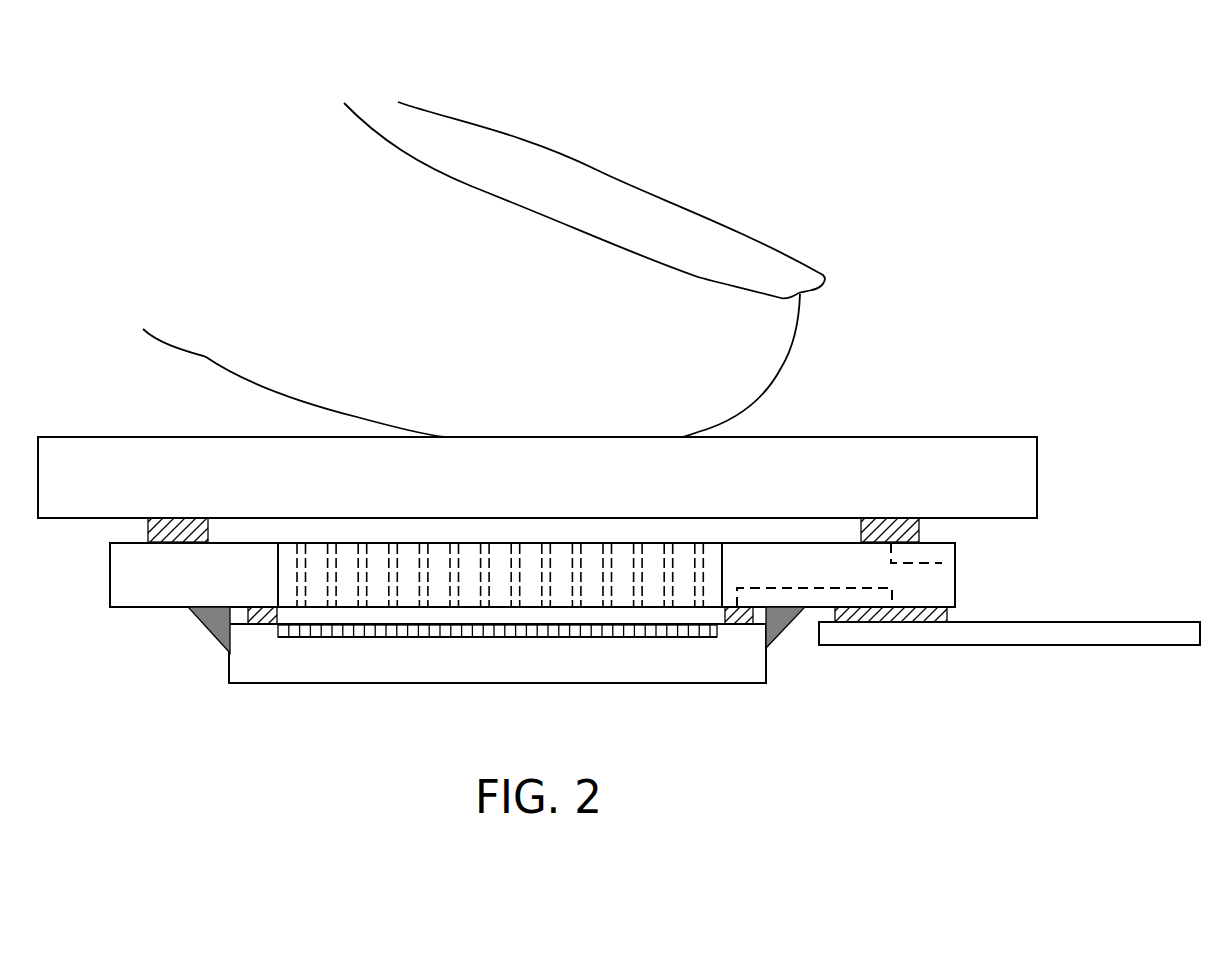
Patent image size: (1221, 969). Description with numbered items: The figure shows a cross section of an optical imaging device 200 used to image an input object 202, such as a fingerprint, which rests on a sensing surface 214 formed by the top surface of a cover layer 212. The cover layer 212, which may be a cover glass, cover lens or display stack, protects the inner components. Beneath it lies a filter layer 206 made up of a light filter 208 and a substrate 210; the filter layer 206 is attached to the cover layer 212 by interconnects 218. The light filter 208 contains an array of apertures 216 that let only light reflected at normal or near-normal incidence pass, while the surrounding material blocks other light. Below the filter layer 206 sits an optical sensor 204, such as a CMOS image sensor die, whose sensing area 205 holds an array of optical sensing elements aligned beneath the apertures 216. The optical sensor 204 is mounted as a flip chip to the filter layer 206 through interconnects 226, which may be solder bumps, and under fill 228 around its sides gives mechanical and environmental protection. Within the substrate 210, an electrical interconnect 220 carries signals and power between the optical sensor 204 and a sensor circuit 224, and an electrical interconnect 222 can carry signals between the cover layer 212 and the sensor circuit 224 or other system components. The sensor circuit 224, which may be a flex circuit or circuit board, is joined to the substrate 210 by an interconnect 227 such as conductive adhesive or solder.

The optical imaging device 200 is at (1092, 536).
The input object 202 is at (484, 269).
The optical sensor 204 is at (497, 653).
The sensing area 205 is at (608, 638).
The filter layer 206 is at (108, 543).
The light filter 208 is at (278, 557).
The substrate 210 is at (957, 575).
The cover layer 212 is at (537, 477).
The sensing surface 214 is at (910, 437).
The apertures 216 is at (420, 560).
The interconnects 218 is at (210, 527).
The electrical interconnect 220 is at (810, 587).
The electrical interconnect 222 is at (893, 564).
The sensor circuit 224 is at (1095, 646).
The interconnects 226 is at (262, 626).
The interconnect 227 is at (903, 621).
The under fill 228 is at (207, 632).